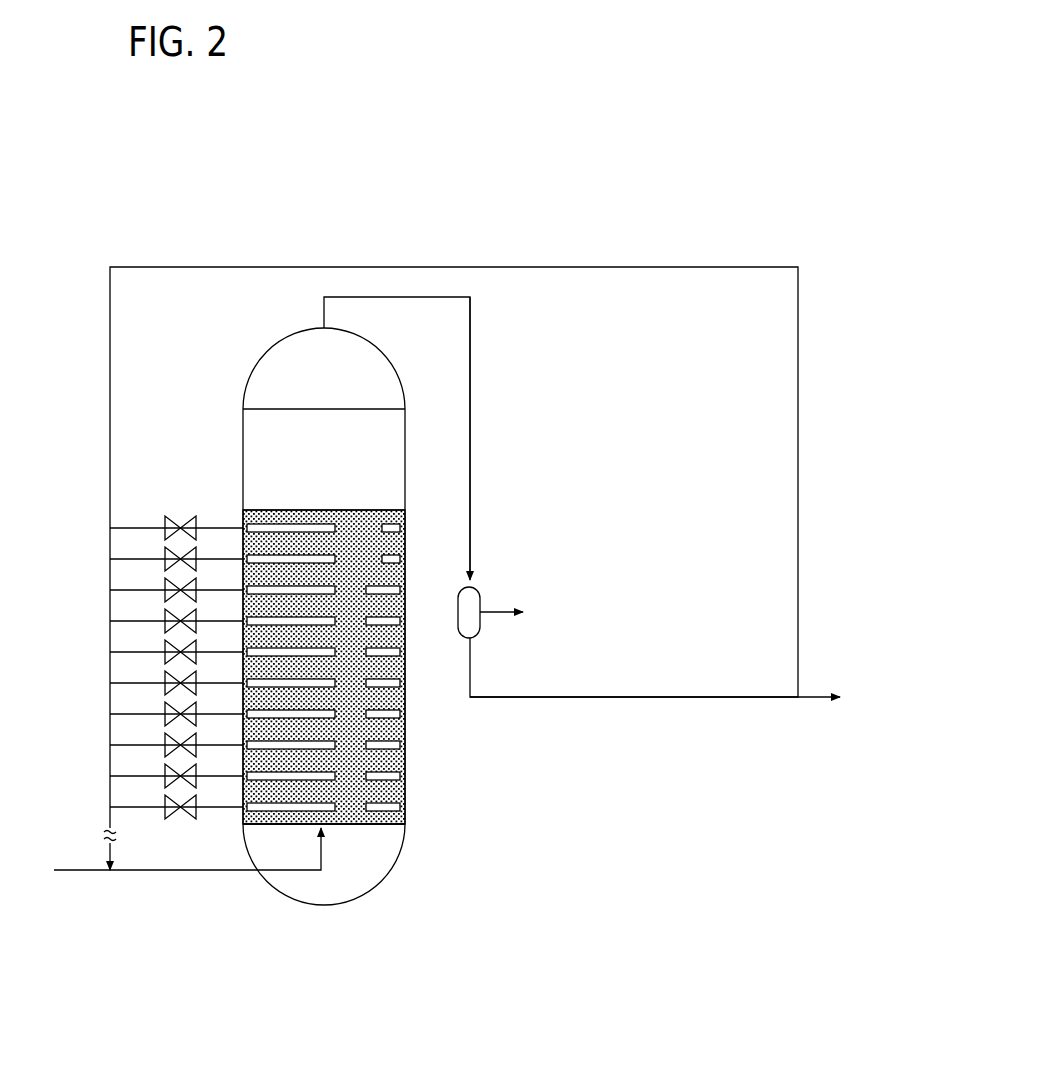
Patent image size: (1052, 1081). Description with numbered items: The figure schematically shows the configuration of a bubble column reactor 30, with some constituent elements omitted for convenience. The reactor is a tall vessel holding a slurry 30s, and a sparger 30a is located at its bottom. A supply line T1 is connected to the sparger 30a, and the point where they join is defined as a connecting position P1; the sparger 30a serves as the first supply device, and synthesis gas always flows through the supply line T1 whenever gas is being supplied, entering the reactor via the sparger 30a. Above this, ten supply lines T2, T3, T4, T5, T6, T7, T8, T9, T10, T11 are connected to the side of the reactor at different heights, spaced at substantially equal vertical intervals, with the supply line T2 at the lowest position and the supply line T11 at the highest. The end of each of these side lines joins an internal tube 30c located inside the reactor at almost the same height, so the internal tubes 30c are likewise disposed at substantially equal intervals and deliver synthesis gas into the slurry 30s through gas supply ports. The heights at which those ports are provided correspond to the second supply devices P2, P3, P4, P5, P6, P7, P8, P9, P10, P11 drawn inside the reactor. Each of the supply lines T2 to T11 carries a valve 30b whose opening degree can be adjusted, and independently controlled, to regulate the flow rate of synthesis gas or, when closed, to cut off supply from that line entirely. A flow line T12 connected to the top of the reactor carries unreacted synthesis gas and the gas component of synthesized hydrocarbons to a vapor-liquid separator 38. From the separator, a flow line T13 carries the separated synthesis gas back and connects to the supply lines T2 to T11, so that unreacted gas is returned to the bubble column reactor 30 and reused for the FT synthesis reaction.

The bubble column reactor 30 is at (203, 232).
The sparger 30a is at (362, 824).
The valves 30b is at (183, 512).
The internal tubes 30c is at (392, 522).
The slurry 30s is at (293, 510).
The vapor-liquid separator 38 is at (470, 602).
The supply line T1 is at (172, 855).
The supply line T2 is at (158, 807).
The supply line T3 is at (158, 776).
The supply line T4 is at (158, 745).
The supply line T5 is at (158, 714).
The supply line T6 is at (158, 683).
The supply line T7 is at (158, 652).
The supply line T8 is at (158, 621).
The supply line T9 is at (158, 590).
The supply line T10 is at (151, 559).
The supply line T11 is at (151, 528).
The flow line T12 is at (472, 408).
The flow line T13 is at (532, 697).
The connecting position P1 is at (324, 834).
The second supply device P2 is at (323, 808).
The second supply device P3 is at (323, 777).
The second supply device P4 is at (323, 746).
The second supply device P5 is at (323, 715).
The second supply device P6 is at (323, 684).
The second supply device P7 is at (323, 653).
The second supply device P8 is at (323, 622).
The second supply device P9 is at (323, 591).
The second supply device P10 is at (323, 560).
The second supply device P11 is at (323, 529).